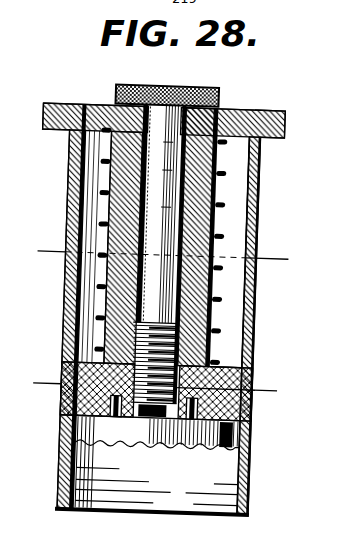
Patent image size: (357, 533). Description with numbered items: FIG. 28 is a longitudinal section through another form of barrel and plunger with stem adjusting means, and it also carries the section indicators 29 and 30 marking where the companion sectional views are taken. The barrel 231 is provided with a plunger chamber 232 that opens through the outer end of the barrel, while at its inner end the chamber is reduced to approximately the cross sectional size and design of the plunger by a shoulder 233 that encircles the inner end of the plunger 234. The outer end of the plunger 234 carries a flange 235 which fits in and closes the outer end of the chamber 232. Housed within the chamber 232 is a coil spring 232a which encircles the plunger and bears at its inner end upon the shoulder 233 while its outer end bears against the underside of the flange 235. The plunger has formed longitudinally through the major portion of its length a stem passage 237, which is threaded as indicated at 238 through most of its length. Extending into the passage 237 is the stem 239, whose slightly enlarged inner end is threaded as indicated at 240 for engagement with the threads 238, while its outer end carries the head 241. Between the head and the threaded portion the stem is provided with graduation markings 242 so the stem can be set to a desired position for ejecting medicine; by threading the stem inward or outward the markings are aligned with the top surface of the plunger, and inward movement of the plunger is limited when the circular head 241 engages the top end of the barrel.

The section line 29- 29 is at (46, 248).
The section line 30- 30 is at (45, 380).
The barrel 231 is at (256, 205).
The plunger chamber 232 is at (232, 308).
The coil spring 232a is at (214, 173).
The shoulder 233 is at (98, 380).
The plunger 234 is at (216, 281).
The flange 235 is at (234, 109).
The stem passage 237 is at (198, 162).
The threads 238 is at (172, 190).
The stem 239 is at (200, 214).
The threaded portion 240 is at (182, 353).
The head 241 is at (213, 88).
The graduation markings 242 is at (164, 143).